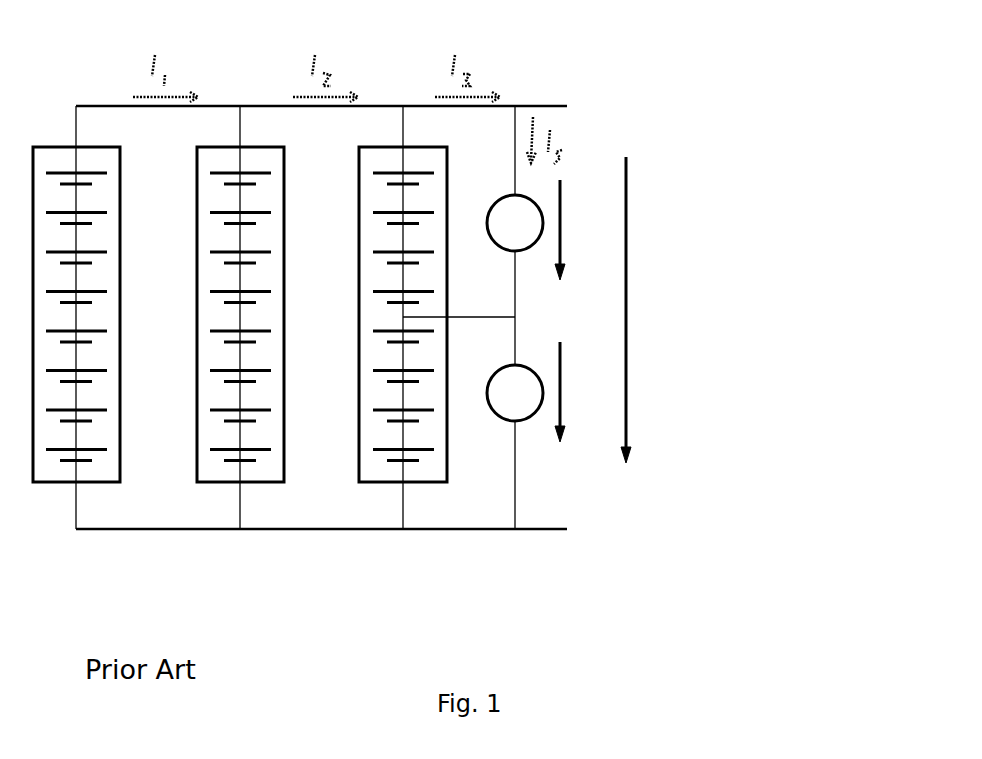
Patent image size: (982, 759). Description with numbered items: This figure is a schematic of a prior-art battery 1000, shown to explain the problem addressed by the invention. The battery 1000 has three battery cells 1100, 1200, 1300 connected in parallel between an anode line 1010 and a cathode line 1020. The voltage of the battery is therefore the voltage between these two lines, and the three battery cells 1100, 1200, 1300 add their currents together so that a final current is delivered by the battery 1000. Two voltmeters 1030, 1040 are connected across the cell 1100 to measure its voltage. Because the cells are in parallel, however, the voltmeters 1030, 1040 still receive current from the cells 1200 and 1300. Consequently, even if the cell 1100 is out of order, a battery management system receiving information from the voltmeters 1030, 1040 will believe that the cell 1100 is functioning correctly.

The battery 1000 is at (660, 118).
The anode line 1010 is at (513, 530).
The cathode line 1020 is at (546, 107).
The voltmeter 1030 is at (543, 207).
The voltmeter 1040 is at (543, 375).
The battery cell 1100 is at (375, 482).
The battery cell 1200 is at (212, 482).
The battery cell 1300 is at (44, 482).